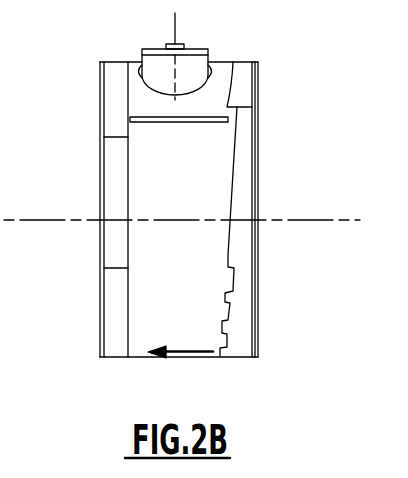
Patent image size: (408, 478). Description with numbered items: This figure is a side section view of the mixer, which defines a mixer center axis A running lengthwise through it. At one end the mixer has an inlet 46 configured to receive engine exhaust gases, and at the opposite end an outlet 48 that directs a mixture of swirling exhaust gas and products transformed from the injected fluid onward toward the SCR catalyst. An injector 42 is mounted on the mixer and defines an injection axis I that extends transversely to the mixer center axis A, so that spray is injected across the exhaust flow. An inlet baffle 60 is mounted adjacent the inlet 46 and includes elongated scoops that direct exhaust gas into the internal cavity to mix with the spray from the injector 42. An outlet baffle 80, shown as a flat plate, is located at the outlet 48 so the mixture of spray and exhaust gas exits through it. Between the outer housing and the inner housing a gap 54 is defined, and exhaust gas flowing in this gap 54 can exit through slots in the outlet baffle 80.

The injector 42 is at (141, 50).
The inlet 46 is at (259, 347).
The outlet 48 is at (100, 353).
The gap 54 is at (182, 354).
The inlet baffle 60 is at (243, 175).
The outlet baffle 80 is at (113, 117).
The injection axis I is at (175, 28).
The mixer center axis A is at (0, 218).